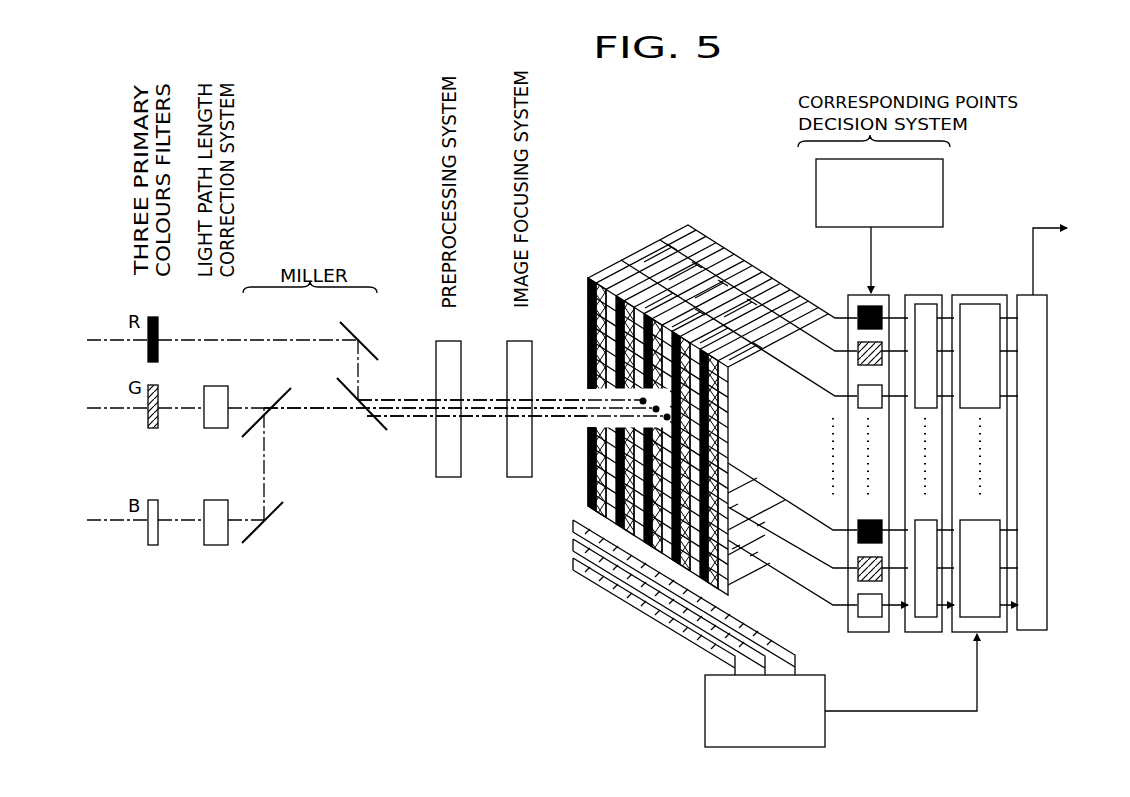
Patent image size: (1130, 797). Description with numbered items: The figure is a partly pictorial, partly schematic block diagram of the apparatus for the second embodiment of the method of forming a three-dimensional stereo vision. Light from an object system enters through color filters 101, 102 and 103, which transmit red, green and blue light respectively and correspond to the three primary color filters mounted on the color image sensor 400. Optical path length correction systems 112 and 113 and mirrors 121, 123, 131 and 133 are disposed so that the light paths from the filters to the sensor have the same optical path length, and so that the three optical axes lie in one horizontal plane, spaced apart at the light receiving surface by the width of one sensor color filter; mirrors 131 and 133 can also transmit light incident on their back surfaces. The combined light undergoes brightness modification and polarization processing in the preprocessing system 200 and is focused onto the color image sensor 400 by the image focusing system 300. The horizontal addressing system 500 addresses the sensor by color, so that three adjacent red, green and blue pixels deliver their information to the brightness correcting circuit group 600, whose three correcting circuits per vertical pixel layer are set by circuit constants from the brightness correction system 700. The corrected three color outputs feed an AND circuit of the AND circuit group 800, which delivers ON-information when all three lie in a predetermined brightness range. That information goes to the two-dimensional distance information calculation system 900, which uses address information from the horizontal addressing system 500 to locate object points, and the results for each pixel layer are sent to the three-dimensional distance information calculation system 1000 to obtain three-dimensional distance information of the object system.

The color filter 101 is at (158, 323).
The color filter 102 is at (153, 430).
The color filter 103 is at (153, 546).
The optical path length correction system 112 is at (216, 430).
The optical path length correction system 113 is at (216, 546).
The mirror 121 is at (359, 332).
The mirror 123 is at (283, 504).
The mirror 131 is at (378, 430).
The mirror 133 is at (290, 388).
The preprocessing system 200 is at (447, 478).
The image focusing system 300 is at (518, 478).
The color image sensor 400 is at (590, 354).
The horizontal addressing system 500 is at (705, 712).
The brightness correcting circuit group 600 is at (866, 633).
The brightness correction system 700 is at (945, 194).
The AND circuit group 800 is at (923, 633).
The two-dimensional distance information calculation system 900 is at (995, 633).
The three-dimensional distance information calculation system 1000 is at (1032, 631).